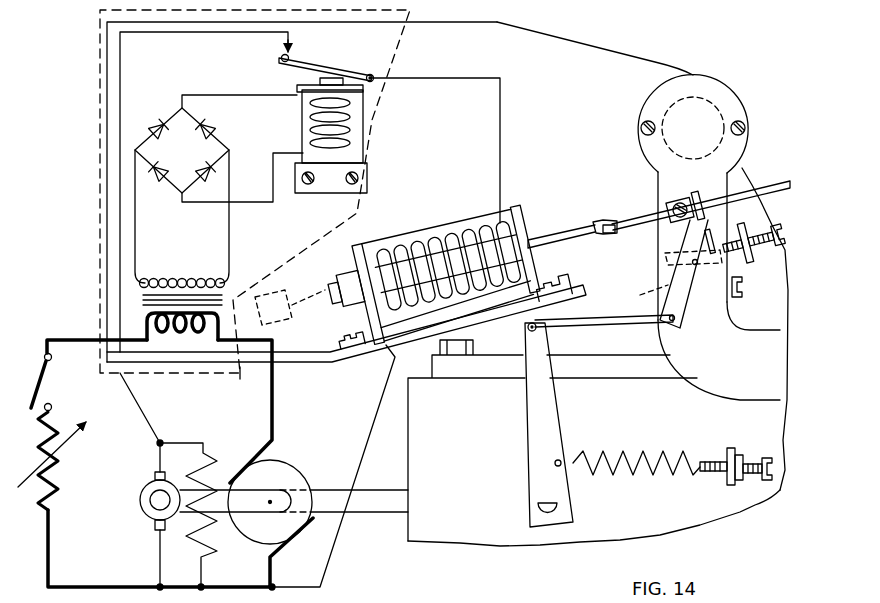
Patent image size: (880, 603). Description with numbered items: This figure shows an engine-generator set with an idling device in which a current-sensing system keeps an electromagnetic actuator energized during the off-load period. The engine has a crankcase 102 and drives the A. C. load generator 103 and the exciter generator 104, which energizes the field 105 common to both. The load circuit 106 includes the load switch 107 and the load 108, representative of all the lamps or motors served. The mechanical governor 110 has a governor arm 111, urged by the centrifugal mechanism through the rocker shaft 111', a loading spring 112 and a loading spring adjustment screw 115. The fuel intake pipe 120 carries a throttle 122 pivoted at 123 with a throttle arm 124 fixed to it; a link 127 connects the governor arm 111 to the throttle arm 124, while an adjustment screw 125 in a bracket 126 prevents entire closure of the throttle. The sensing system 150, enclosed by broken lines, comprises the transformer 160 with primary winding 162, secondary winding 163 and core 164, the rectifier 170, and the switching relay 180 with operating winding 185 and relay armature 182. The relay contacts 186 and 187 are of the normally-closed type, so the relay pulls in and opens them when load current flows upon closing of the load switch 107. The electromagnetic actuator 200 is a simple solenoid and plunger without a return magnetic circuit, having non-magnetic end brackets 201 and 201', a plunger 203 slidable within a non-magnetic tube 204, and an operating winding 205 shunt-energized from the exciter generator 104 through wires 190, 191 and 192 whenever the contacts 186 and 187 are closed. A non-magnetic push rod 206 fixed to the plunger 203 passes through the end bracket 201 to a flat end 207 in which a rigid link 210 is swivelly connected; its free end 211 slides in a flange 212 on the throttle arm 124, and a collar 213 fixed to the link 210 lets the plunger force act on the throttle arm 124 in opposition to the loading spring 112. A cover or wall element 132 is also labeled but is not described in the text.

The crankcase 102 is at (470, 548).
The A. C. load generator 103 is at (282, 472).
The exciter generator 104 is at (143, 512).
The field 105 is at (207, 560).
The load circuit 106 is at (270, 408).
The load switch 107 is at (45, 378).
The load 108 is at (60, 478).
The mechanical governor 110 is at (515, 492).
The governor arm 111 is at (565, 425).
The rocker shaft 111' is at (583, 508).
The loading spring 112 is at (636, 483).
The loading spring adjustment screw 115 is at (718, 472).
The fuel intake pipe 120 is at (733, 375).
The throttle 122 is at (638, 295).
The throttle pivot 123 is at (668, 258).
The throttle arm 124 is at (685, 302).
The adjustment screw 125 is at (738, 238).
The bracket 126 is at (747, 260).
The link 127 is at (610, 325).
The cover plate 132 is at (588, 65).
The sensing system 150 is at (100, 188).
The transformer 160 is at (163, 266).
The primary winding 162 is at (182, 334).
The secondary winding 163 is at (185, 283).
The transformer core 164 is at (222, 296).
The rectifier 170 is at (172, 108).
The electromagnetic switching relay 180 is at (374, 122).
The relay armature 182 is at (330, 68).
The operating winding 185 is at (302, 118).
The switching contact 186 is at (280, 59).
The switching contact 187 is at (284, 45).
The wire 190 is at (120, 52).
The wire 191 is at (463, 150).
The wire 192 is at (378, 407).
The electromagnetic actuator 200 is at (427, 218).
The end bracket 201 is at (538, 247).
The end bracket 201' is at (348, 294).
The plunger 203 is at (330, 284).
The non-magnetic tube 204 is at (347, 320).
The operating winding 205 is at (392, 248).
The push rod 206 is at (590, 235).
The flat end 207 is at (605, 238).
The rigid link 210 is at (620, 215).
The free end 211 is at (772, 182).
The flange 212 is at (712, 186).
The collar 213 is at (672, 200).